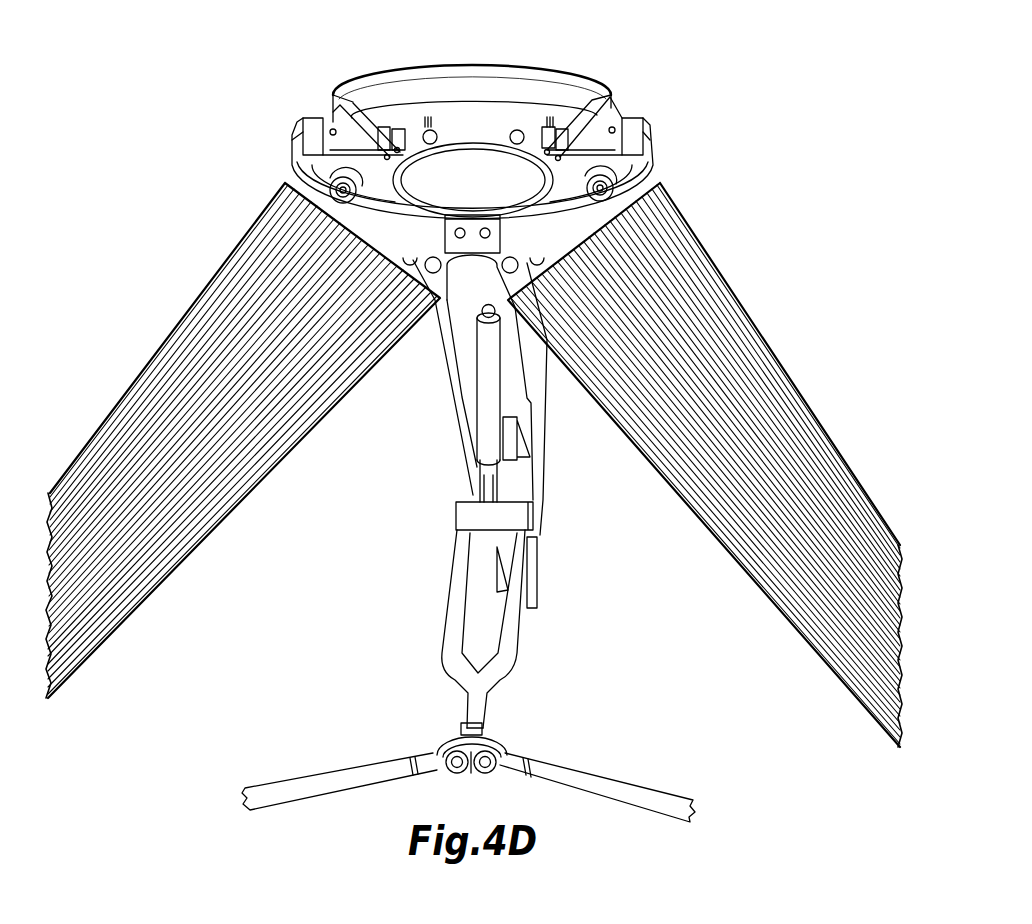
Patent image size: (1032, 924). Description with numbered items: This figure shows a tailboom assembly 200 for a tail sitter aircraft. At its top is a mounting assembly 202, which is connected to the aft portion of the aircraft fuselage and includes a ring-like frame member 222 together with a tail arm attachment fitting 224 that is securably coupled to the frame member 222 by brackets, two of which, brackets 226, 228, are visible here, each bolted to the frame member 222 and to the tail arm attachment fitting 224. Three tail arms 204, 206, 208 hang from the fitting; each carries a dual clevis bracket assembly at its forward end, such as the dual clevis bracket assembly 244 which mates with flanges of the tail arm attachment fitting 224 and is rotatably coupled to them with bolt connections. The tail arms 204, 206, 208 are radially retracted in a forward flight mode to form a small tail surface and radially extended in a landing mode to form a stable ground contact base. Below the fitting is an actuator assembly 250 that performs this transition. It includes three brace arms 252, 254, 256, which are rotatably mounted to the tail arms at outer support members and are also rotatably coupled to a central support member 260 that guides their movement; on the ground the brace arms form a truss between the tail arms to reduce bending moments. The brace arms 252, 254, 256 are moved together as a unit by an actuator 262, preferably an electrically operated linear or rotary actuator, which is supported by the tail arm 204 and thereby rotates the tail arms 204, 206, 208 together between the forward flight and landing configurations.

The tailboom assembly 200 is at (761, 148).
The mounting assembly 202 is at (541, 63).
The tail arm 204 is at (445, 392).
The tail arm 206 is at (745, 325).
The tail arm 208 is at (202, 327).
The frame member 222 is at (487, 95).
The tail arm attachment fitting 224 is at (403, 197).
The bracket 226 is at (615, 113).
The bracket 228 is at (322, 115).
The dual clevis bracket assembly 244 is at (440, 128).
The actuator assembly 250 is at (553, 564).
The brace arm 252 is at (455, 597).
The brace arm 254 is at (612, 782).
The brace arm 256 is at (340, 775).
The central support member 260 is at (493, 737).
The actuator 262 is at (503, 472).